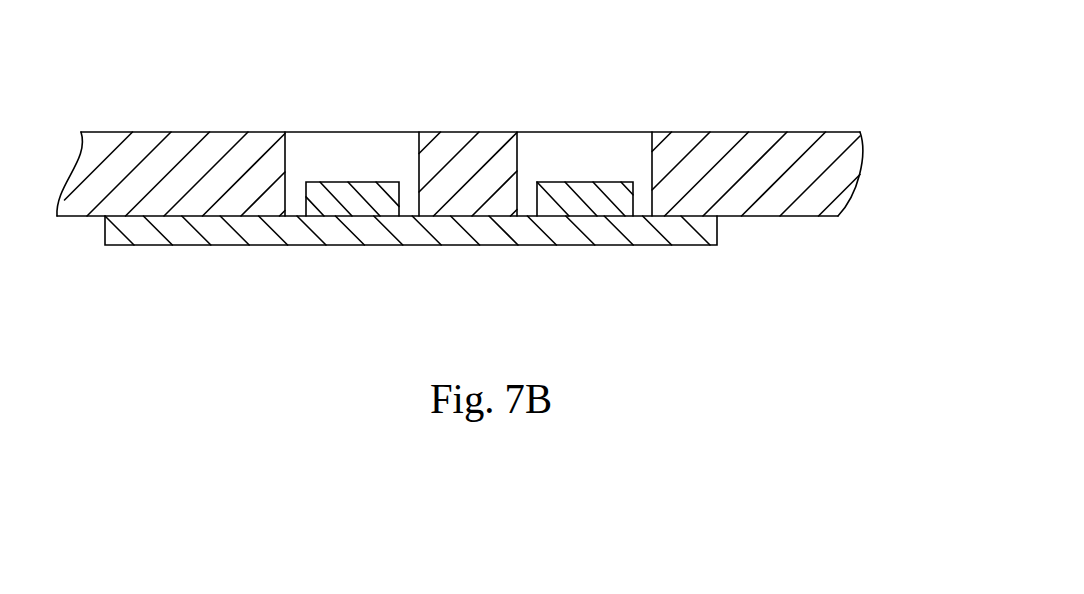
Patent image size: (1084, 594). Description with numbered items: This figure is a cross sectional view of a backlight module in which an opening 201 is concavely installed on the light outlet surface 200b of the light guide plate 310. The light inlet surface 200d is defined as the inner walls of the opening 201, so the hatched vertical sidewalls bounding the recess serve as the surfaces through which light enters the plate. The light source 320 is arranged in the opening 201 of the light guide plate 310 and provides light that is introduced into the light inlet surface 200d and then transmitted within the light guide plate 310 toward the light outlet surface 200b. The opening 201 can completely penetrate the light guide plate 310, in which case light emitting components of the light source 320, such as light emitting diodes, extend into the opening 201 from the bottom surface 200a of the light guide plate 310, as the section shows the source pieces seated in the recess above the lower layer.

The bottom surface 200a is at (773, 216).
The light outlet surface 200b is at (728, 130).
The light inlet surface 200d is at (287, 155).
The opening 201 is at (583, 167).
The light guide plate 310 is at (835, 173).
The light source 320 is at (547, 193).